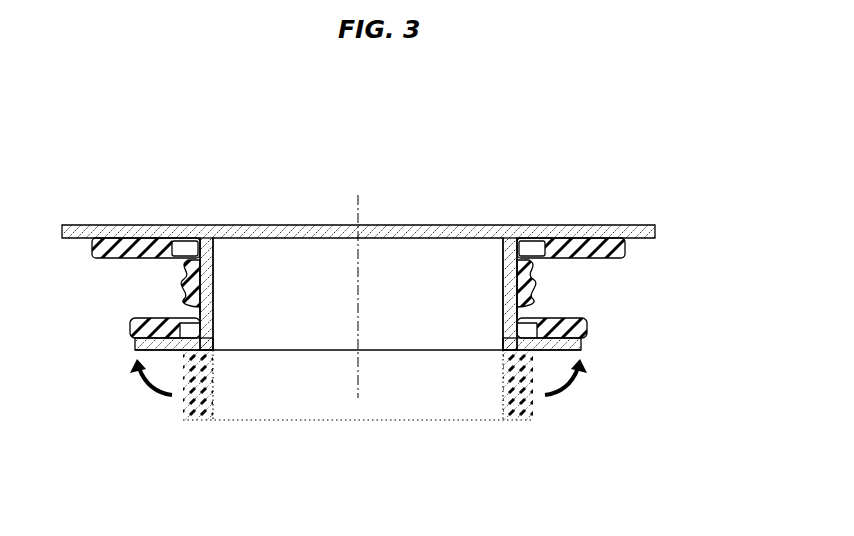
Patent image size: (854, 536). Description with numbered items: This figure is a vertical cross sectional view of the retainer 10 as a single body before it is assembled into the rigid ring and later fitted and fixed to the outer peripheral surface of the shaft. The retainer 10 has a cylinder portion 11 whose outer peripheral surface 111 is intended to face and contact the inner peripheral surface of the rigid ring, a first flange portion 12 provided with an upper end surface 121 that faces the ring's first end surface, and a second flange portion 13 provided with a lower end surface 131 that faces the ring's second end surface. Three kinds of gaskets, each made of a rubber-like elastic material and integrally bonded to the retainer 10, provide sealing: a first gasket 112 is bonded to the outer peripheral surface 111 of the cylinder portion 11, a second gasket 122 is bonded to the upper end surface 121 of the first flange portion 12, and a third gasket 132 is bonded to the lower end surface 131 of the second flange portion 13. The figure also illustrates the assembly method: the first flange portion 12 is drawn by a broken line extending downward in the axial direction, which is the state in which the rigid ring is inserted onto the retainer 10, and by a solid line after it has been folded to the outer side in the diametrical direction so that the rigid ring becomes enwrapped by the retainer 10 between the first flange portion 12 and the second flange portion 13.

The retainer 10 is at (458, 163).
The cylinder portion 11 is at (503, 300).
The outer peripheral surface 111 is at (517, 313).
The first gasket 112 is at (534, 280).
The first flange portion 12 is at (568, 352).
The upper end surface 121 is at (541, 345).
The second gasket 122 is at (583, 318).
The second flange portion 13 is at (605, 223).
The lower end surface 131 is at (533, 238).
The third gasket 132 is at (576, 255).